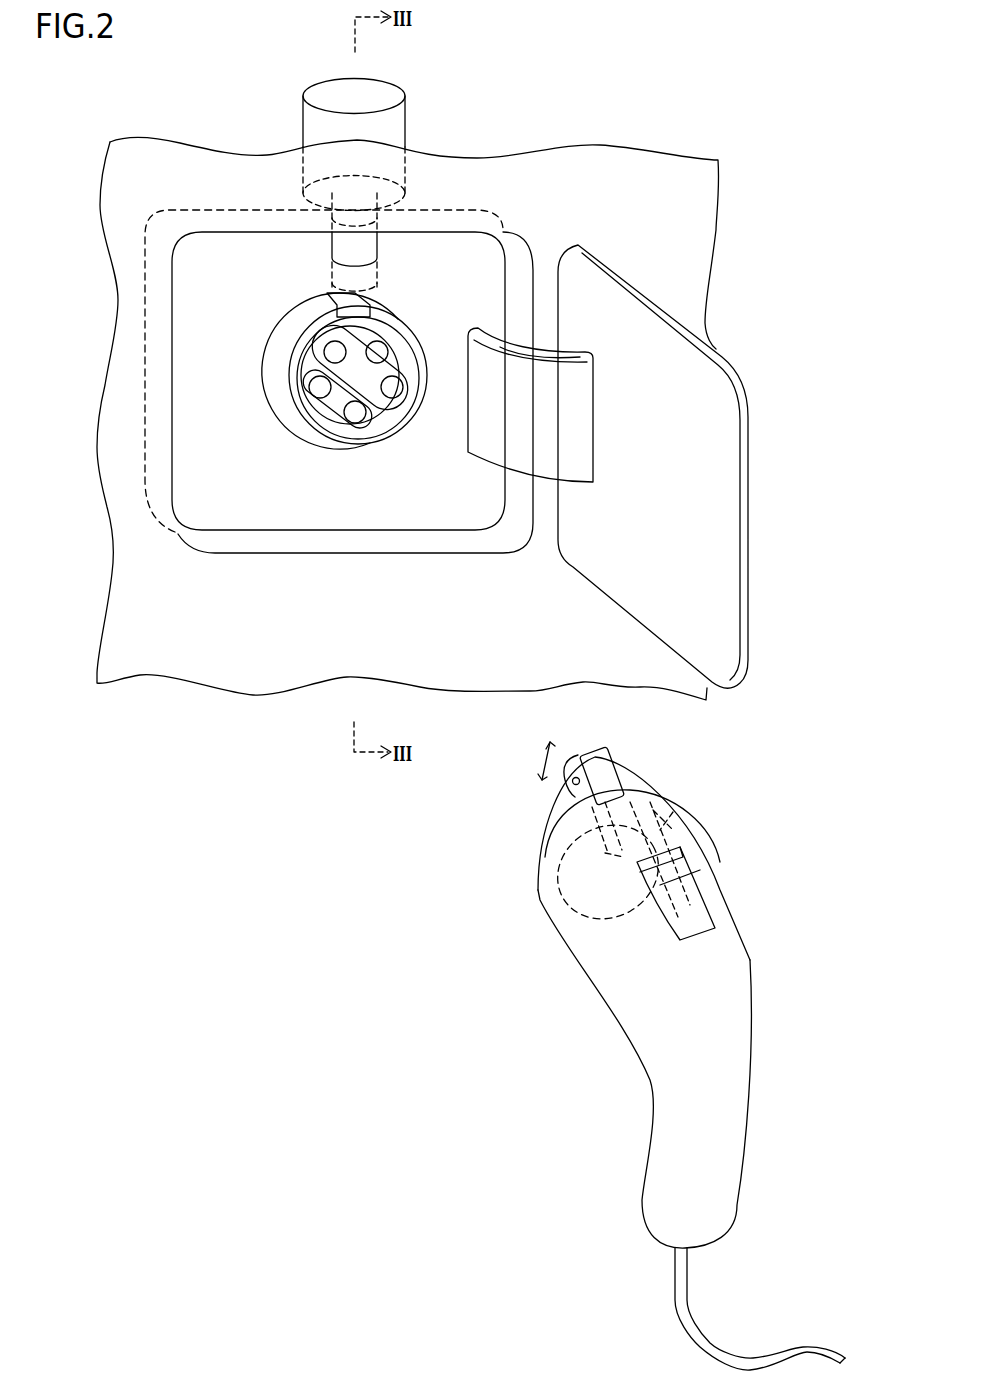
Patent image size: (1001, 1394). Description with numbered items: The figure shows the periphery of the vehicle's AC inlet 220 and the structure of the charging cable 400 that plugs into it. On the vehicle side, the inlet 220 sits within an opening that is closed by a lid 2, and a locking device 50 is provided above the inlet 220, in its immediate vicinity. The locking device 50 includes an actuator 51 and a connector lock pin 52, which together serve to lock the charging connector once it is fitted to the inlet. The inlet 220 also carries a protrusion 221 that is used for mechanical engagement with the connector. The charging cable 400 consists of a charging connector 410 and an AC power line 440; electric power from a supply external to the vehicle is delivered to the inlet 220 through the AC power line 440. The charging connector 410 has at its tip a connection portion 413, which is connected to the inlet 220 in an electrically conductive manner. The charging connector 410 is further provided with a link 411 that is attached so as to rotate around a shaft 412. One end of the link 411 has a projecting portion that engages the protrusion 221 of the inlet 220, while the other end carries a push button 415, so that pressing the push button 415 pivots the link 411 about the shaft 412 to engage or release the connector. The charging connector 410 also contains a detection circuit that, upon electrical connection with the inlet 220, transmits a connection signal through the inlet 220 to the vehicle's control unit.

The lid 2 is at (748, 540).
The locking device 50 is at (417, 162).
The actuator 51 is at (396, 125).
The connector lock pin 52 is at (398, 252).
The AC inlet 220 is at (305, 333).
The protrusion 221 is at (372, 297).
The charging cable 400 is at (661, 1053).
The charging connector 410 is at (753, 990).
The link 411 is at (572, 783).
The shaft 412 is at (655, 812).
The connection portion 413 is at (627, 766).
The push button 415 is at (688, 857).
The AC power line 440 is at (682, 1310).